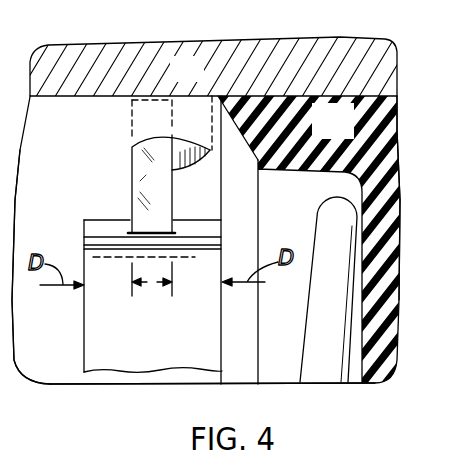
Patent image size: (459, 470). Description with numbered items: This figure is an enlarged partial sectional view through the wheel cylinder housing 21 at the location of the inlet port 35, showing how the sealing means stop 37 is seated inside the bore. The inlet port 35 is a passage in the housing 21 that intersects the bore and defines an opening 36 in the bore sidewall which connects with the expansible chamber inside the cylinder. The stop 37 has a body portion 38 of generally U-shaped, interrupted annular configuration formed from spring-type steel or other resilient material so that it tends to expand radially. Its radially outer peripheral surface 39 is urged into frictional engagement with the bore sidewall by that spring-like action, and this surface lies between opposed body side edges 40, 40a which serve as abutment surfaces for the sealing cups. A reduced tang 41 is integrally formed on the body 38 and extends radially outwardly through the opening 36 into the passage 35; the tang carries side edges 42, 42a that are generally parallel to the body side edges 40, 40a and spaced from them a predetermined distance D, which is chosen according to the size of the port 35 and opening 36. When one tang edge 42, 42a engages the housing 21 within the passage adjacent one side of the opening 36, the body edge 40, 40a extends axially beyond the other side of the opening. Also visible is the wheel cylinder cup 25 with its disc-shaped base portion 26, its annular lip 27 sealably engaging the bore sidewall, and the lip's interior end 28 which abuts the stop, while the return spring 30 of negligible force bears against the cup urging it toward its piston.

The housing 21 is at (360, 38).
The wheel cylinder cup 25 is at (401, 118).
The base portion 26 is at (398, 214).
The lip portion 27 is at (330, 136).
The interior end 28 is at (218, 94).
The return spring 30 is at (327, 234).
The inlet port 35 is at (138, 73).
The opening 36 is at (158, 160).
The sealing means stop 37 is at (84, 346).
The body portion 38 is at (133, 366).
The peripheral surface 39 is at (103, 221).
The body side edge 40 is at (220, 327).
The body side edge 40a is at (88, 372).
The tang 41 is at (160, 203).
The tang side edge 42 is at (177, 111).
The tang side edge 42a is at (131, 135).